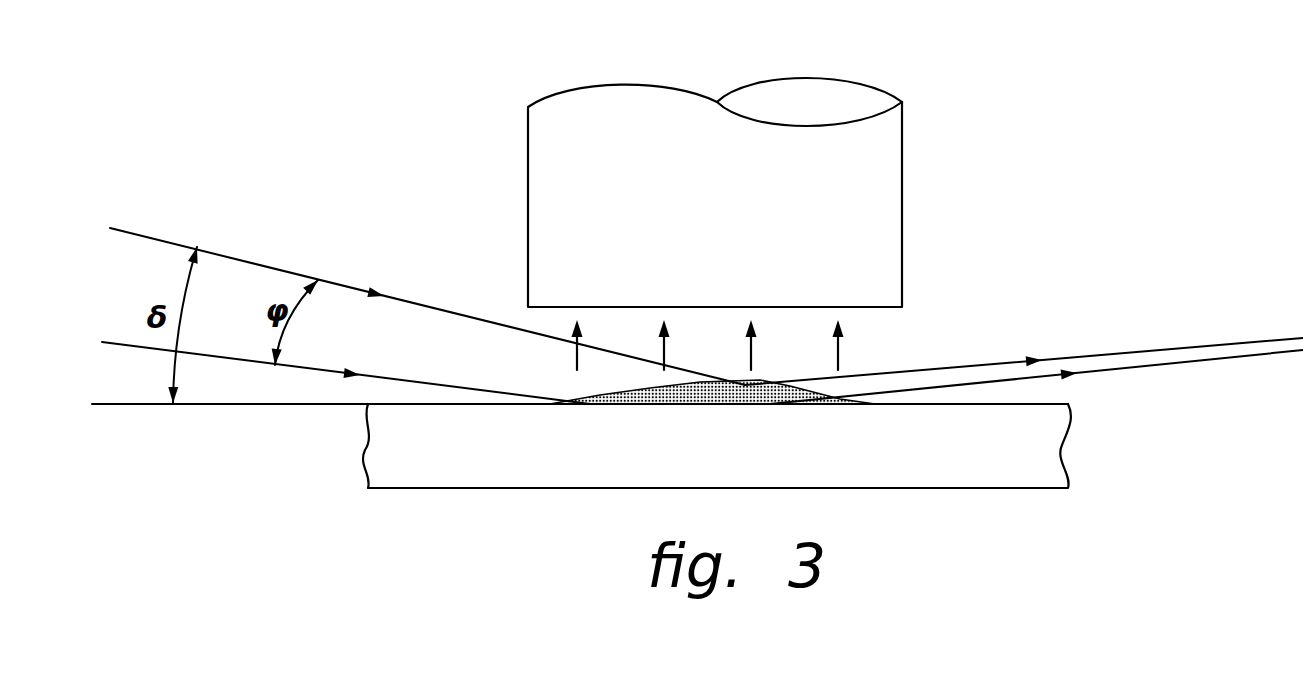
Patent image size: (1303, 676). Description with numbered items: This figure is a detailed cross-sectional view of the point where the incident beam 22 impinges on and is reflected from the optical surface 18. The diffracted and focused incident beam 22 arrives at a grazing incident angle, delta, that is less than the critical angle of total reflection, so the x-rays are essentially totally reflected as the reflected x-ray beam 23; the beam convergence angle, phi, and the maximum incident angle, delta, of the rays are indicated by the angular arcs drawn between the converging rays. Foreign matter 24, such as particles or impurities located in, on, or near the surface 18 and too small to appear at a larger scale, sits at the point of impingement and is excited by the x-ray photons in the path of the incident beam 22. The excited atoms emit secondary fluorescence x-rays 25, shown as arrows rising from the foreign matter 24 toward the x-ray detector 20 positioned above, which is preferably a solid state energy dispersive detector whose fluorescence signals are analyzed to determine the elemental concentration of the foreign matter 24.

The optical surface 18 is at (1060, 427).
The x-ray detector 20 is at (878, 182).
The incident beam 22 is at (142, 243).
The reflected x-ray beam 23 is at (1113, 350).
The foreign matter 24 is at (763, 405).
The secondary fluorescence x-rays 25 is at (578, 356).